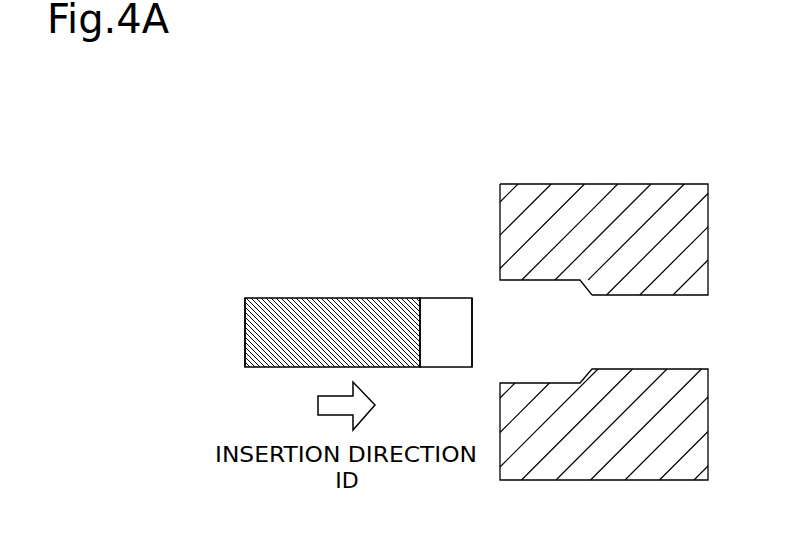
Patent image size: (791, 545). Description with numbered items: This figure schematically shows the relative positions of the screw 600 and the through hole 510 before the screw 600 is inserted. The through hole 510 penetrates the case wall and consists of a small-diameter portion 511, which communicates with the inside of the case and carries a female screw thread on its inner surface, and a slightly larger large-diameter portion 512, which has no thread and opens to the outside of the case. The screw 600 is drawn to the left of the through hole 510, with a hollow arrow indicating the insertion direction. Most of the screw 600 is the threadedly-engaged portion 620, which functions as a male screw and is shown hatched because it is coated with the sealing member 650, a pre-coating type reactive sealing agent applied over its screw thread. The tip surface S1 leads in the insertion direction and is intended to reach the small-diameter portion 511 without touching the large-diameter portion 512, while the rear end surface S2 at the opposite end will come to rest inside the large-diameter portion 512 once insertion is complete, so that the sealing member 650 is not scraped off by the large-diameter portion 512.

The through hole 510 is at (604, 299).
The small-diameter portion 511 is at (708, 118).
The large-diameter portion 512 is at (592, 295).
The screw 600 is at (343, 294).
The sealing member 650 is at (277, 337).
The threadedly-engaged portion 620 is at (285, 338).
The tip surface S1 is at (472, 330).
The rear end surface S2 is at (245, 312).